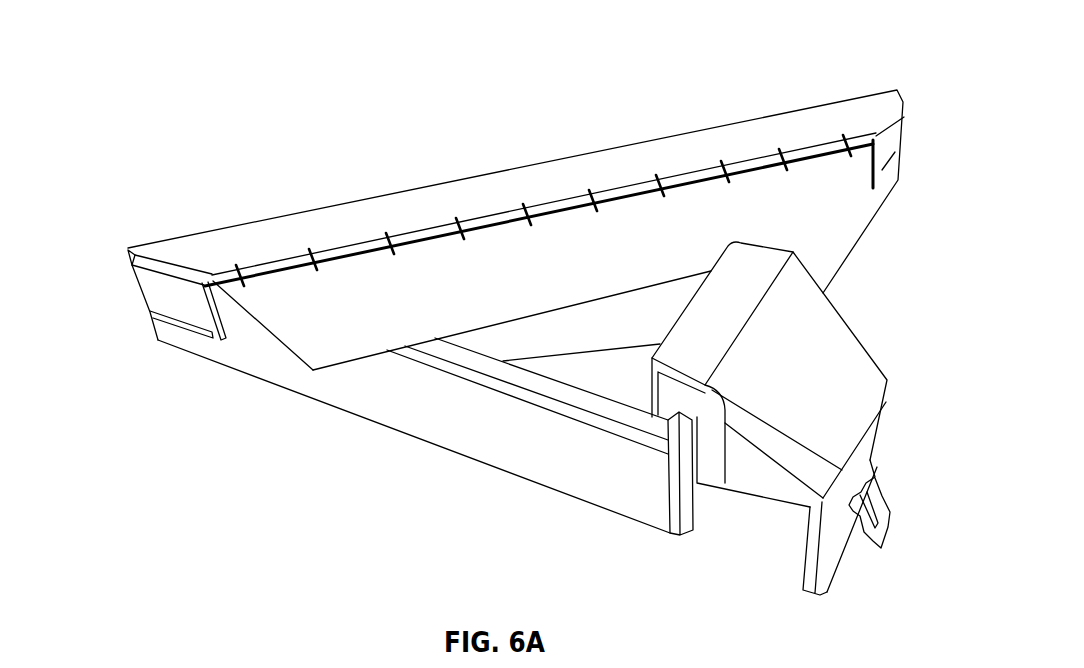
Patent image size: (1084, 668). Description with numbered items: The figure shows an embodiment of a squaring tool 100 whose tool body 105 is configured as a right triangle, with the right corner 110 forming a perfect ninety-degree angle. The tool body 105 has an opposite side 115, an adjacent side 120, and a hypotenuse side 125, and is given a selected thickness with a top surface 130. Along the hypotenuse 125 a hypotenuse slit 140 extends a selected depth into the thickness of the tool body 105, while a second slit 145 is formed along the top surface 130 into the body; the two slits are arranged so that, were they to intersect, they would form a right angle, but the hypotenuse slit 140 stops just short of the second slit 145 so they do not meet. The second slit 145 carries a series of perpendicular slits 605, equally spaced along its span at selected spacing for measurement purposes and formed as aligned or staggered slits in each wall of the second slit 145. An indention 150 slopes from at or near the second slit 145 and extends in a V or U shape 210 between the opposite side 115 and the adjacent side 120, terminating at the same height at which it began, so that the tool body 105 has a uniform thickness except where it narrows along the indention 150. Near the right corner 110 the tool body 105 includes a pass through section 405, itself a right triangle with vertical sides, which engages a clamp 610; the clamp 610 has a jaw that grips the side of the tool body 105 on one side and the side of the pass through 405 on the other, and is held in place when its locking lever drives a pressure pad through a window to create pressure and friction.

The squaring tool 100 is at (207, 68).
The tool body 105 is at (143, 202).
The right corner 110 is at (683, 520).
The opposite side 115 is at (370, 400).
The adjacent side 120 is at (843, 211).
The hypotenuse side 125 is at (390, 192).
The top surface 130 is at (689, 137).
The hypotenuse slit 140 is at (160, 326).
The second slit 145 is at (212, 330).
The indention 150 is at (330, 353).
The V or U shape 210 is at (528, 262).
The pass through section 405 is at (587, 375).
The series of perpendicular slits 605 is at (300, 265).
The clamp 610 is at (835, 355).